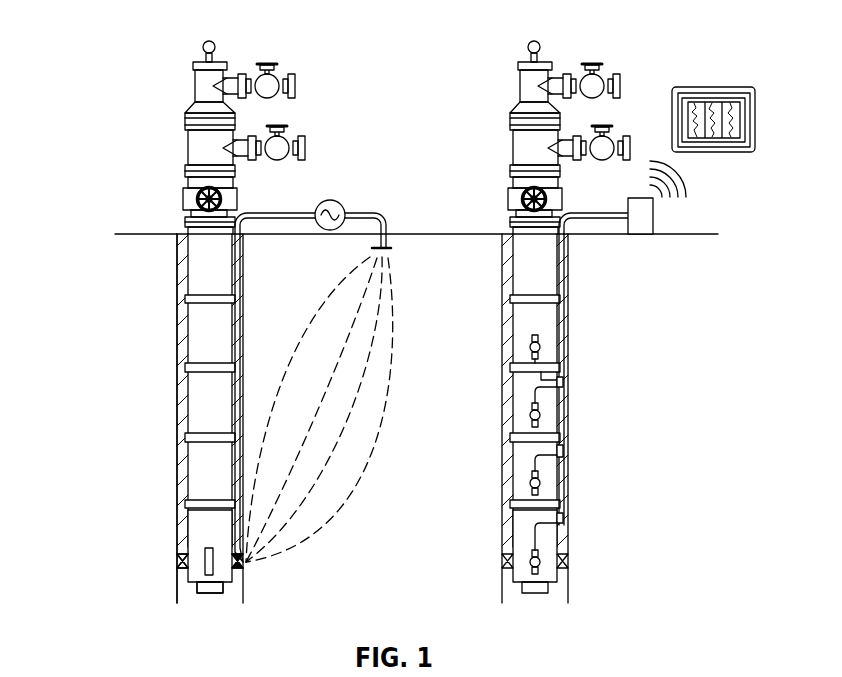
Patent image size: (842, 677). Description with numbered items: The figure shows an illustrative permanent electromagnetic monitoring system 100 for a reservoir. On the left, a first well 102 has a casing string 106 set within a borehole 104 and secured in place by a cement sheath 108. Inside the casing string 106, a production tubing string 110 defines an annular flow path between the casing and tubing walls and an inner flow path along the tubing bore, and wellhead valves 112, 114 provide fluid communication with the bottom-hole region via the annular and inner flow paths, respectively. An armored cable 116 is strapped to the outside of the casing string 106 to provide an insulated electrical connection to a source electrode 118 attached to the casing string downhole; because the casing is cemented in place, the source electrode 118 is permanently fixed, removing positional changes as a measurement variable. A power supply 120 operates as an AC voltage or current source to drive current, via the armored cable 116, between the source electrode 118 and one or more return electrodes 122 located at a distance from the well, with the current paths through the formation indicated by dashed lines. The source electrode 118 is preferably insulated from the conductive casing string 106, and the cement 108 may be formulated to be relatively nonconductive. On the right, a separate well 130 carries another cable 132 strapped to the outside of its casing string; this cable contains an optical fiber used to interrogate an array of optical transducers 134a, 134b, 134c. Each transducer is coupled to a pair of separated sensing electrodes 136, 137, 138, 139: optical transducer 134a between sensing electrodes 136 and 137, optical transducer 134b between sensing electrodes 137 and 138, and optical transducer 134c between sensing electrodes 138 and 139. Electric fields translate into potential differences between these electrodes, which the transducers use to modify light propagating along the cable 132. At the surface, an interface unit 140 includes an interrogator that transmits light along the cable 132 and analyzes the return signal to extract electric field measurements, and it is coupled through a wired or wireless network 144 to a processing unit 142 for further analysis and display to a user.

The permanent EM monitoring system 100 is at (114, 32).
The first well 102 is at (139, 106).
The borehole 104 is at (177, 580).
The casing string 106 is at (193, 472).
The cement sheath 108 is at (182, 517).
The production tubing string 110 is at (202, 595).
The wellhead valve 112 is at (301, 143).
The wellhead valve 114 is at (297, 76).
The armored cable 116 is at (310, 212).
The source electrode 118 is at (243, 567).
The power supply 120 is at (333, 199).
The return electrode 122 is at (391, 232).
The separate well 130 is at (491, 106).
The cable 132 is at (567, 268).
The optical transducer 134a is at (563, 384).
The optical transducer 134b is at (563, 453).
The optical transducer 134c is at (563, 520).
The sensing electrode 136 is at (530, 347).
The sensing electrode 137 is at (530, 415).
The sensing electrode 138 is at (530, 483).
The sensing electrode 139 is at (530, 562).
The interface unit 140 is at (647, 235).
The processing unit 142 is at (733, 87).
The network 144 is at (688, 195).